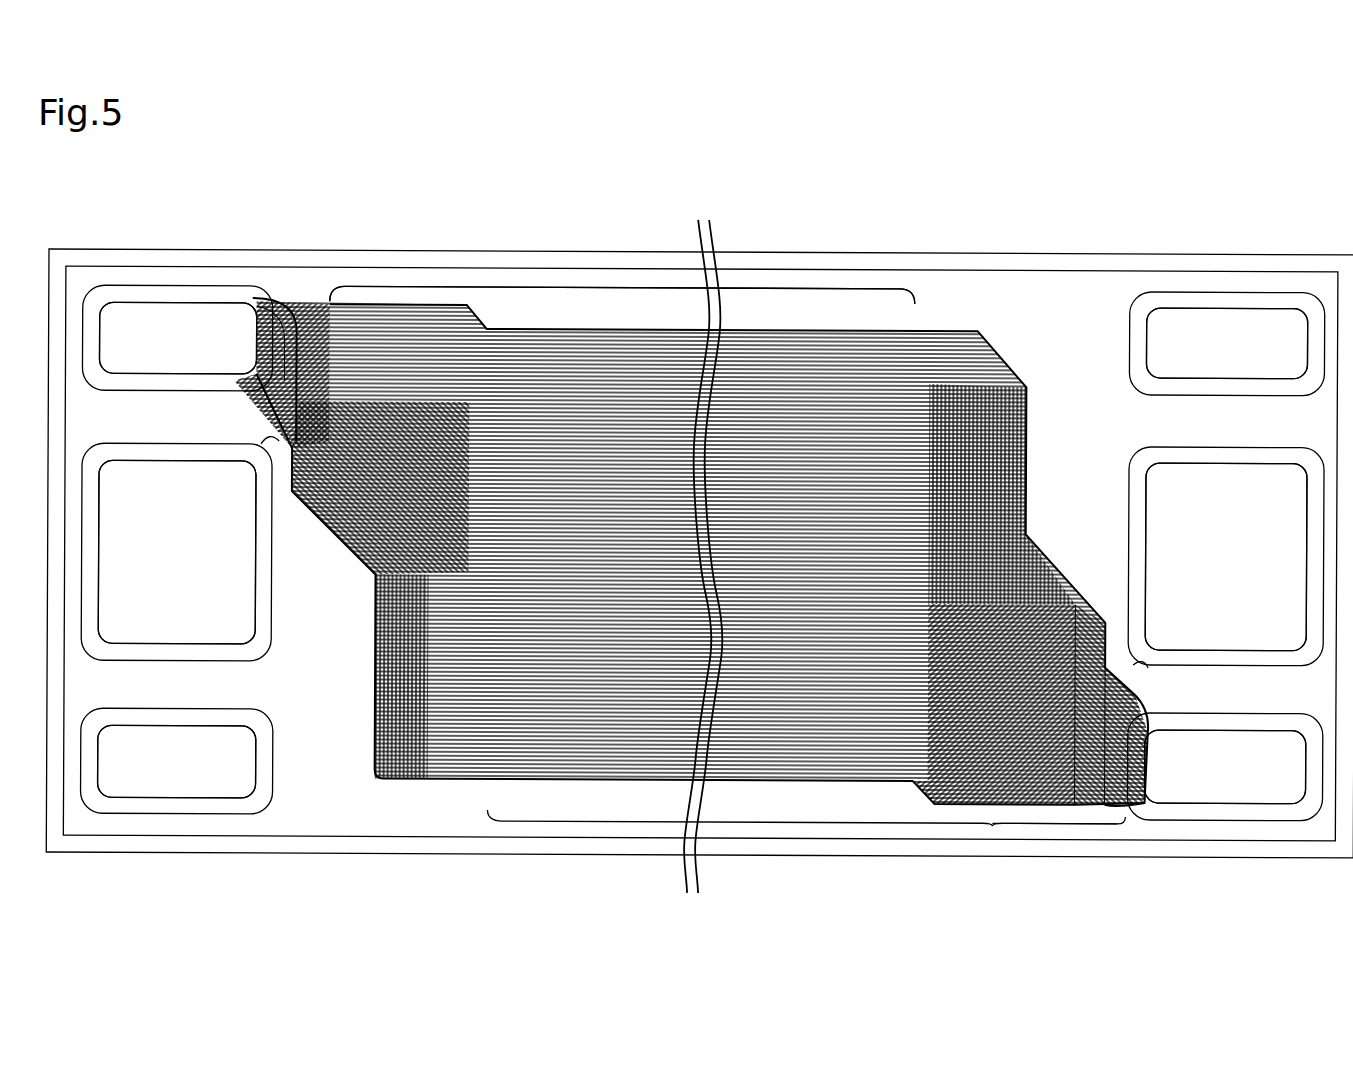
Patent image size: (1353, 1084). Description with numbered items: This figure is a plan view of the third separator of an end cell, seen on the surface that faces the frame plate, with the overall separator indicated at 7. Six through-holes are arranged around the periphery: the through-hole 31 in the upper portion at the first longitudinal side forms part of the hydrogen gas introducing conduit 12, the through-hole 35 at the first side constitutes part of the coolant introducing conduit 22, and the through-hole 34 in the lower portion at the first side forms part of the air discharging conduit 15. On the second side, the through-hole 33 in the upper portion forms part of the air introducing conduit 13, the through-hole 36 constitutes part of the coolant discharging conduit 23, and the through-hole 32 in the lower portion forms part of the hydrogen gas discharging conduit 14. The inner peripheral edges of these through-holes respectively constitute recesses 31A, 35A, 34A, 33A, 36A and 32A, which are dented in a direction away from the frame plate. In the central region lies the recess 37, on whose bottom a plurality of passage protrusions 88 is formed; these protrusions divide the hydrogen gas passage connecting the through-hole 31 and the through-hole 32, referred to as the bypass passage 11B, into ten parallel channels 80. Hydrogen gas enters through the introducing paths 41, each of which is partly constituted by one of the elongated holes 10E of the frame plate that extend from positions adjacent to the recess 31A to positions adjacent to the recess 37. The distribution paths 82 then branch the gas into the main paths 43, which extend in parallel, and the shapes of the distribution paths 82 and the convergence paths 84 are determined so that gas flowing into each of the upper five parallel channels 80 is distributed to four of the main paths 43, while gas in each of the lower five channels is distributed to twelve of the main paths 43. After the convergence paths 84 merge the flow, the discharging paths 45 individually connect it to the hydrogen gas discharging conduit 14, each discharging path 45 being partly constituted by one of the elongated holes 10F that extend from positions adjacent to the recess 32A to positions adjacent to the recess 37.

The substrate 7 is at (1334, 209).
The recess 31A is at (135, 285).
The through-hole 31 is at (135, 373).
The hydrogen gas introducing conduit 12 is at (177, 338).
The recess 35A is at (150, 443).
The through-hole 35 is at (135, 643).
The coolant introducing conduit 22 is at (177, 552).
The recess 34A is at (212, 708).
The through-hole 34 is at (172, 725).
The air discharging conduit 15 is at (177, 761).
The recess 33A is at (1205, 390).
The through-hole 33 is at (1237, 373).
The air introducing conduit 13 is at (1226, 343).
The through-hole 36 is at (1275, 458).
The recess 36A is at (1262, 660).
The coolant discharging conduit 23 is at (1226, 557).
The recess 32A is at (1270, 815).
The through-hole 32 is at (1272, 725).
The hydrogen gas discharging conduit 14 is at (1224, 767).
The distribution paths 82 is at (415, 283).
The main paths 43 is at (660, 283).
The convergence paths 84 is at (995, 822).
The bypass passage 11B is at (832, 352).
The recess 37 is at (965, 327).
The passage protrusions 88 is at (380, 660).
The introducing paths 41 is at (262, 300).
The elongated holes 10E is at (237, 349).
The parallel channels 80 is at (262, 443).
The elongated holes 10F is at (1158, 773).
The discharging paths 45 is at (1118, 805).